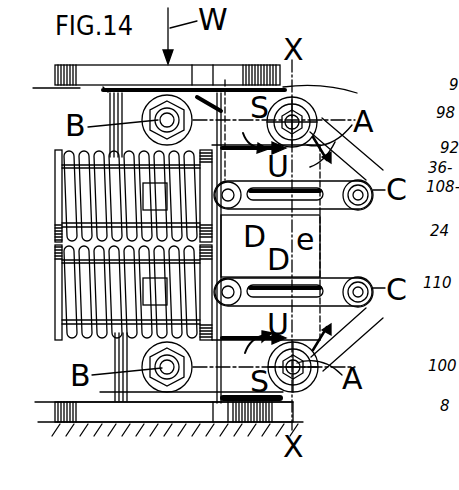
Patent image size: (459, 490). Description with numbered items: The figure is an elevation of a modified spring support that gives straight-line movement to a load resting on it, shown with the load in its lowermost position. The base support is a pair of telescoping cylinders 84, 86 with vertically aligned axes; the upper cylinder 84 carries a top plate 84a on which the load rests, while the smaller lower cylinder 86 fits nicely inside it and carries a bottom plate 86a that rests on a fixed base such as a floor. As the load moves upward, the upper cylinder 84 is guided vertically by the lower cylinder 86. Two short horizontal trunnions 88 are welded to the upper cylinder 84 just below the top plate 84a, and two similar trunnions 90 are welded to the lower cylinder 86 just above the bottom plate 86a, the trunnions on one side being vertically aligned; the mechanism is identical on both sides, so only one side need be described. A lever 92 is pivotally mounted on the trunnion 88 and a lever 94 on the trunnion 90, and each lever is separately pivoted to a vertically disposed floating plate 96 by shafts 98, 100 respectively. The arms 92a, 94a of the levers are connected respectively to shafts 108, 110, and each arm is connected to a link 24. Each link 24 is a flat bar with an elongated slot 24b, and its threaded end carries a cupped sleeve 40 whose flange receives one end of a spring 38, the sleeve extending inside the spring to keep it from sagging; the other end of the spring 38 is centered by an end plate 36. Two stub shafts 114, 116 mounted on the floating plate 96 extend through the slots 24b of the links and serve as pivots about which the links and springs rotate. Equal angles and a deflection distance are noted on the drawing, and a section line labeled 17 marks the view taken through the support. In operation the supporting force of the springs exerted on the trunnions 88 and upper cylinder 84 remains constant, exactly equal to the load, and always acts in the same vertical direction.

The section line 17- 17 is at (43, 112).
The link 24 is at (316, 231).
The elongated slot 24b is at (262, 275).
The end plate 36 is at (179, 120).
The spring 38 is at (76, 152).
The cupped sleeve 40 is at (74, 340).
The upper cylinder 84 is at (111, 104).
The top plate 84a is at (148, 67).
The lower cylinder 86 is at (116, 352).
The bottom plate 86a is at (90, 403).
The trunnion 88 is at (168, 127).
The trunnion 90 is at (167, 375).
The lever 92 is at (291, 88).
The lever arm 92a is at (354, 144).
The lever 94 is at (303, 389).
The lever arm 94a is at (350, 326).
The floating plate 96 is at (320, 245).
The shaft 98 is at (357, 94).
The shaft 100 is at (335, 346).
The shaft 108 is at (372, 206).
The shaft 110 is at (372, 280).
The stub shaft 114 is at (236, 182).
The stub shaft 116 is at (243, 268).